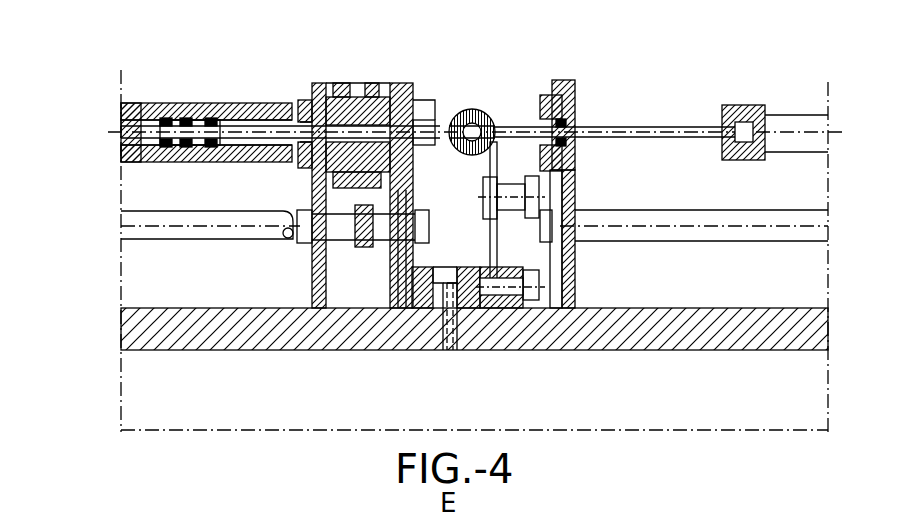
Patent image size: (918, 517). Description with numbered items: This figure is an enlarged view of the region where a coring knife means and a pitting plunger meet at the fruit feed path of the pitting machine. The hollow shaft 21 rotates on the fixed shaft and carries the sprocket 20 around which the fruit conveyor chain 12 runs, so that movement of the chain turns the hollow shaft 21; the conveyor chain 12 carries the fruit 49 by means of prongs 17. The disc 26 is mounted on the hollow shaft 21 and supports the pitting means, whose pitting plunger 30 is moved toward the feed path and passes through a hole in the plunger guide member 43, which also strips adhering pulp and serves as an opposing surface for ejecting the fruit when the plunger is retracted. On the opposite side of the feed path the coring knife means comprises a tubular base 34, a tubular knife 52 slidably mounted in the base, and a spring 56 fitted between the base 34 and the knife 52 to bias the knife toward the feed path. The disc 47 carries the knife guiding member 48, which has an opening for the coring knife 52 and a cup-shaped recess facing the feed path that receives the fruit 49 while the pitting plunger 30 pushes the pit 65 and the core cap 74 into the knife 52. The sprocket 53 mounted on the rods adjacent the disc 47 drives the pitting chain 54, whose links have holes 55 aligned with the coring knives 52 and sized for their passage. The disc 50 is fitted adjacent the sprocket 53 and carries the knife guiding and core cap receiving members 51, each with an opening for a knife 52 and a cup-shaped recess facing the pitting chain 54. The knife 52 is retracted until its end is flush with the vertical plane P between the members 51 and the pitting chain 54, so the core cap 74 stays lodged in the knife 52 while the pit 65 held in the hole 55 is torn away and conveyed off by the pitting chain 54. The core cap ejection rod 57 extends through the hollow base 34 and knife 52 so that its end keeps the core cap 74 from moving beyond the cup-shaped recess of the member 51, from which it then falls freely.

The rod 57 is at (128, 103).
The tubular base 34 is at (160, 103).
The spring 56 is at (208, 103).
The knife guiding and core cap receiving member 51 is at (302, 100).
The vertical plane P is at (332, 98).
The pitting chain 54 is at (365, 97).
The hole 55 is at (395, 97).
The knife guiding member 48 is at (420, 100).
The tubular knife 52 is at (435, 122).
The fruit 49 is at (482, 100).
The prong 17 is at (487, 165).
The plunger guide member 43 is at (563, 105).
The pitting plunger 30 is at (662, 128).
The fruit conveyor chain 12 is at (547, 148).
The disc 26 is at (568, 195).
The disc 50 is at (310, 190).
The core cap 74 is at (288, 238).
The sprocket 53 is at (353, 250).
The disc 47 is at (405, 200).
The pit 65 is at (470, 250).
The sprocket 20 is at (520, 290).
The hollow shaft 21 is at (632, 330).